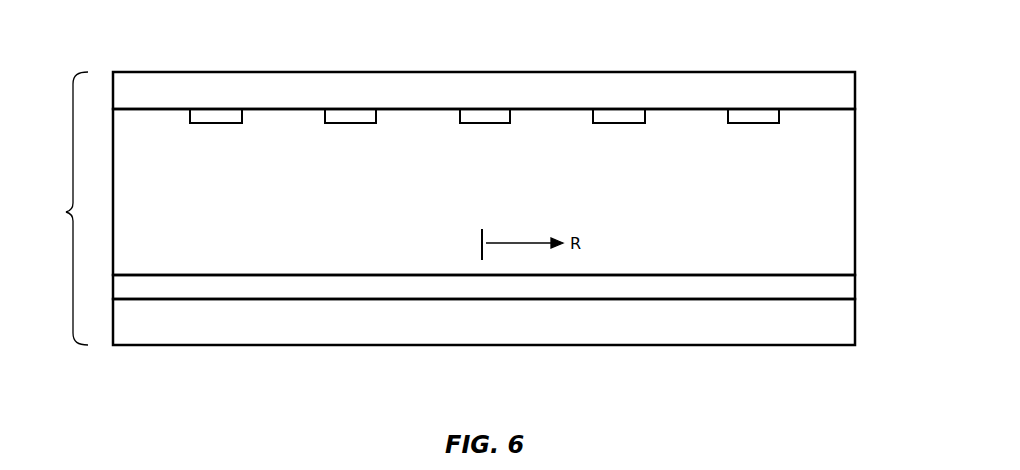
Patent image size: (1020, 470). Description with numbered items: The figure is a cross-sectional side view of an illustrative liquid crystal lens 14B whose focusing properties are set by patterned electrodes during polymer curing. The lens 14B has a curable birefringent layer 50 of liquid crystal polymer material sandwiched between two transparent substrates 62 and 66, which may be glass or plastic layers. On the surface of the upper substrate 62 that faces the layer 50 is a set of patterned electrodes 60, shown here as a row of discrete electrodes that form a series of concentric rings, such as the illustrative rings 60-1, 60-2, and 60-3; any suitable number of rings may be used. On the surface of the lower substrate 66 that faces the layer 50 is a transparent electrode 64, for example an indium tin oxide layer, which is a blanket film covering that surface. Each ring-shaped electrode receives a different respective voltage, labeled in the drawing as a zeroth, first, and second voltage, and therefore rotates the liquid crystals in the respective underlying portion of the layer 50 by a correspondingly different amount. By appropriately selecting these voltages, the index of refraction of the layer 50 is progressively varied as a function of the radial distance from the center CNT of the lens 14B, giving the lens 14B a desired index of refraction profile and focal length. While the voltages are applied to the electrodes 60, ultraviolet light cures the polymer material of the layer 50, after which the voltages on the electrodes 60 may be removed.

The lens 14B is at (57, 208).
The curable birefringent layer 50 is at (840, 187).
The patterned electrodes 60 is at (476, 124).
The ring 60-1 is at (493, 125).
The ring 60-2 is at (363, 123).
The ring 60-3 is at (206, 125).
The transparent substrate 62 is at (840, 90).
The transparent electrode 64 is at (840, 285).
The transparent substrate 66 is at (840, 325).
The center CNT is at (480, 252).